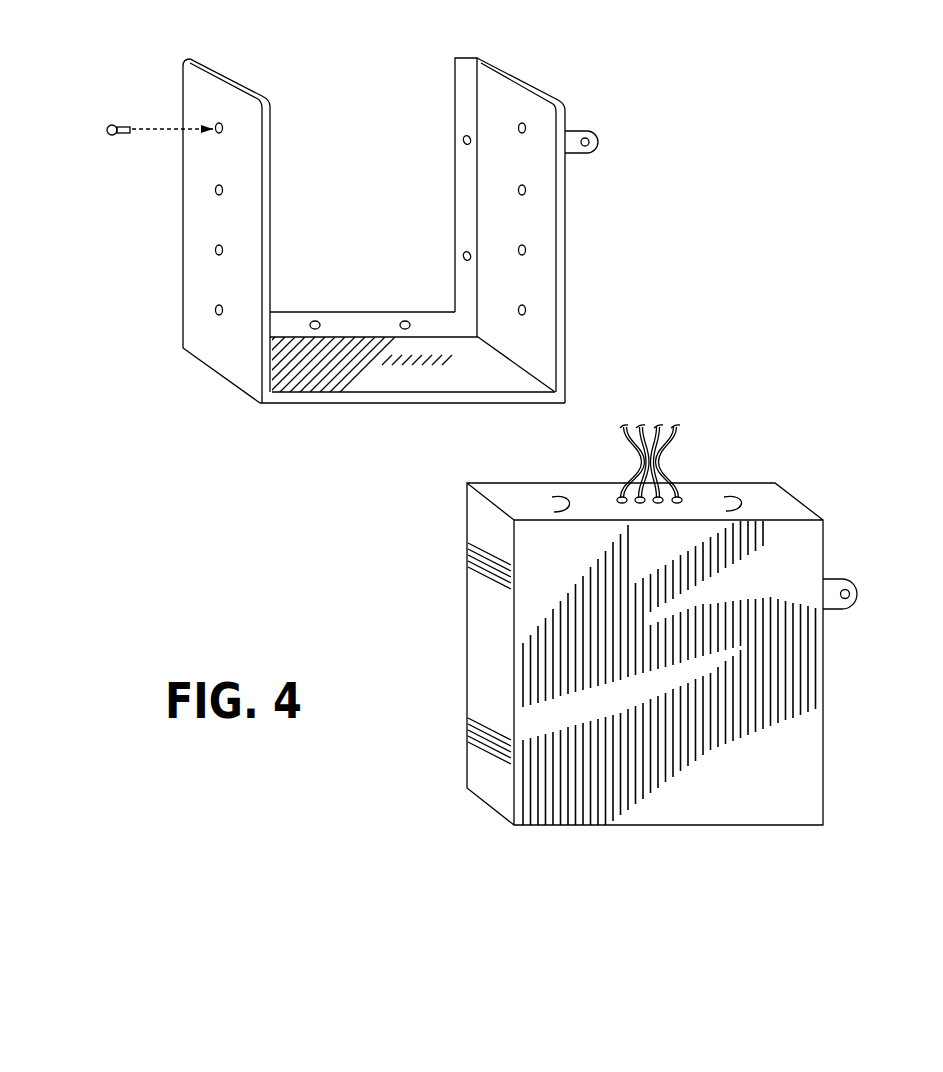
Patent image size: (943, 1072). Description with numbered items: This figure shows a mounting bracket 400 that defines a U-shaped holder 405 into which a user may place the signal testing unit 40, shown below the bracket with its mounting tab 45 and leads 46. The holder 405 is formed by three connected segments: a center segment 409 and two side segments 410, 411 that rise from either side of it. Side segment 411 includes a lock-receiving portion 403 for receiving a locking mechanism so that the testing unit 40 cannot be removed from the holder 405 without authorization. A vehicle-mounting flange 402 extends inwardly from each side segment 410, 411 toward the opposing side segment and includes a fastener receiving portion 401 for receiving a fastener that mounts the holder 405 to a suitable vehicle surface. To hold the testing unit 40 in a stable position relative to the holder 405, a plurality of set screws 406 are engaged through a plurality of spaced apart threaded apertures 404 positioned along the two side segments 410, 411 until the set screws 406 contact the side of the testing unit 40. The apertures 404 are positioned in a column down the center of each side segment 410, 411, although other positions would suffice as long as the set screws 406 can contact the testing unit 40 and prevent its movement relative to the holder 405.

The mounting bracket 400 is at (319, 115).
The fastener receiving portion 401 is at (462, 150).
The vehicle-mounting flange 402 is at (465, 120).
The lock-receiving portion 403 is at (590, 158).
The threaded apertures 404 is at (527, 127).
The U-shaped holder 405 is at (362, 297).
The set screws 406 is at (115, 121).
The center segment 409 is at (367, 372).
The side segment 410 is at (193, 242).
The side segment 411 is at (527, 345).
The wire leads 46 is at (687, 492).
The mounting tab 45 is at (847, 572).
The signal testing unit 40 is at (522, 838).